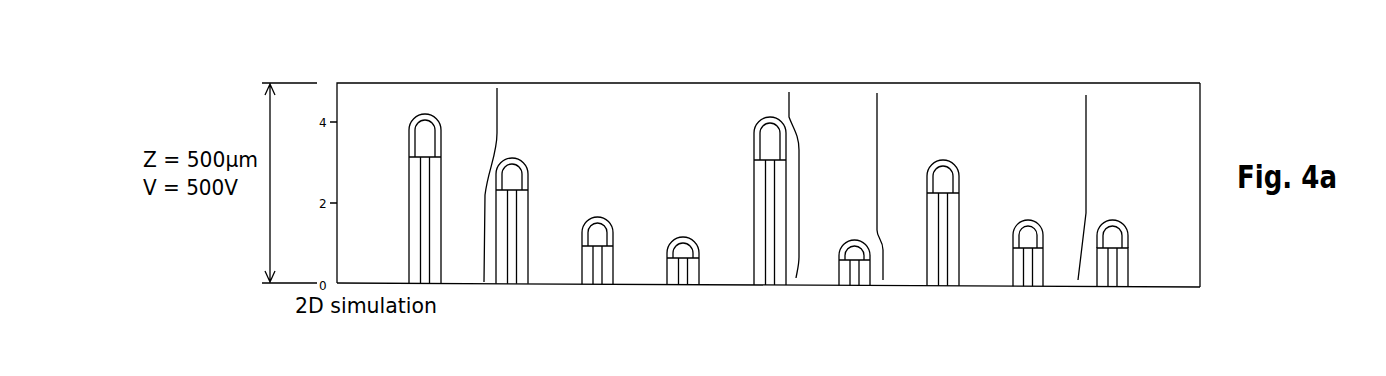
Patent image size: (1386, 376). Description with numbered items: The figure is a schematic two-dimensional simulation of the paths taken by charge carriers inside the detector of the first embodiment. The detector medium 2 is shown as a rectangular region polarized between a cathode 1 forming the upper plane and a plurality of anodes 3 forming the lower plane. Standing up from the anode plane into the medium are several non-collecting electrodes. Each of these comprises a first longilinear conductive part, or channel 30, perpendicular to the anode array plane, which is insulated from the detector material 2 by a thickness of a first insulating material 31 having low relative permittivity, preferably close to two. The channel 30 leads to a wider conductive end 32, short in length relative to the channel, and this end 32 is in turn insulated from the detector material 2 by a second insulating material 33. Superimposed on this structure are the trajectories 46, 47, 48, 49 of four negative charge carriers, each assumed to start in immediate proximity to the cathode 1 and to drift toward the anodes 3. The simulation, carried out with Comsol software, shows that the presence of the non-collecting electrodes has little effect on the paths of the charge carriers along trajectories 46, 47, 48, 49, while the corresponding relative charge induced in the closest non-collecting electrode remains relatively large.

The cathode 1 is at (938, 83).
The detector material 2 is at (1157, 140).
The anodes 3 is at (467, 285).
The channel 30 is at (1113, 283).
The first insulating material 31 is at (1122, 274).
The wider end 32 is at (1127, 228).
The second insulating material 33 is at (1117, 240).
The trajectory 46 is at (497, 133).
The trajectory 47 is at (788, 117).
The trajectory 48 is at (876, 140).
The trajectory 49 is at (1085, 163).